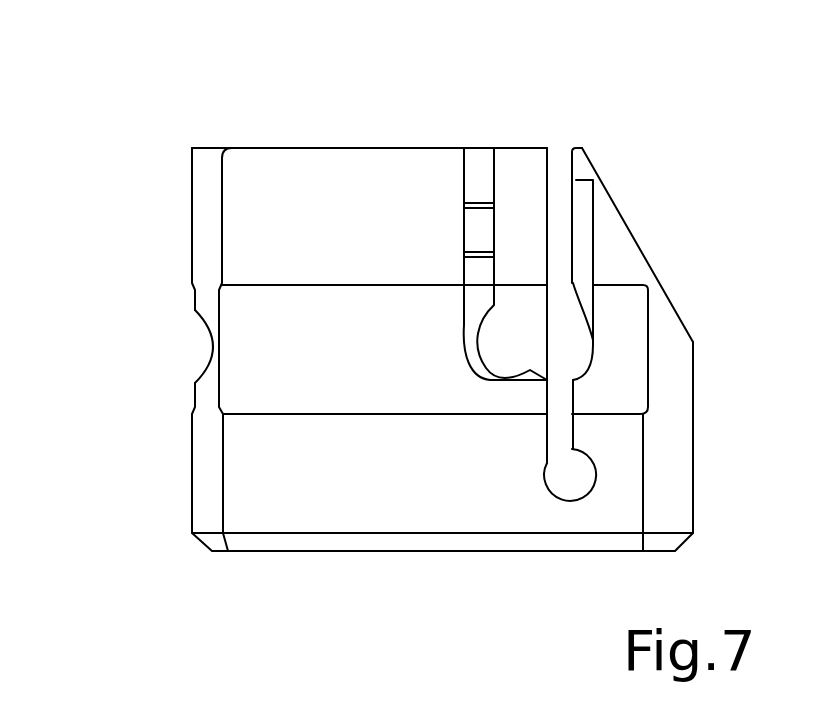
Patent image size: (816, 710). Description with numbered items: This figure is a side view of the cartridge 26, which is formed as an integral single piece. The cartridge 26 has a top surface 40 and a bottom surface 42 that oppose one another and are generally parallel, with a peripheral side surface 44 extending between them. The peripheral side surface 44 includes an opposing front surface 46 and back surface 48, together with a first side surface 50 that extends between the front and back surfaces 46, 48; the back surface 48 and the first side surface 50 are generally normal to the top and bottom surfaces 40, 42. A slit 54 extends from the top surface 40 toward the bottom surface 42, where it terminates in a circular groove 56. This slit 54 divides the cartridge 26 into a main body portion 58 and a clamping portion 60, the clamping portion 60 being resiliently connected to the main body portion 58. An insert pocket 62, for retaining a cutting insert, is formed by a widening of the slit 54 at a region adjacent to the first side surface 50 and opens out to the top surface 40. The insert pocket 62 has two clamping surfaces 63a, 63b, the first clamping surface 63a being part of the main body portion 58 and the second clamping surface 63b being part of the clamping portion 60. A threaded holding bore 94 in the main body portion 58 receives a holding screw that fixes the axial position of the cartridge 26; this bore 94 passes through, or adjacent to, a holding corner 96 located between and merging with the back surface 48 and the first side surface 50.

The cartridge 26 is at (153, 149).
The top surface 40 is at (287, 148).
The bottom surface 42 is at (306, 553).
The peripheral side surface 44 is at (252, 186).
The front surface 46 is at (695, 388).
The back surface 48 is at (192, 430).
The first side surface 50 is at (245, 495).
The slit 54 is at (558, 148).
The circular groove 56 is at (570, 472).
The main body portion 58 is at (356, 148).
The clamping portion 60 is at (645, 242).
The insert pocket 62 is at (512, 148).
The clamping surface 63a is at (477, 168).
The clamping surface 63b is at (586, 203).
The threaded holding bore 94 is at (202, 352).
The holding corner 96 is at (205, 242).